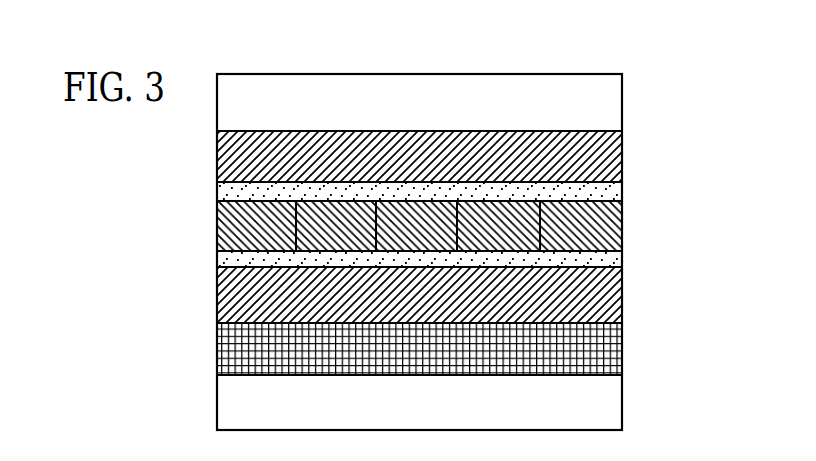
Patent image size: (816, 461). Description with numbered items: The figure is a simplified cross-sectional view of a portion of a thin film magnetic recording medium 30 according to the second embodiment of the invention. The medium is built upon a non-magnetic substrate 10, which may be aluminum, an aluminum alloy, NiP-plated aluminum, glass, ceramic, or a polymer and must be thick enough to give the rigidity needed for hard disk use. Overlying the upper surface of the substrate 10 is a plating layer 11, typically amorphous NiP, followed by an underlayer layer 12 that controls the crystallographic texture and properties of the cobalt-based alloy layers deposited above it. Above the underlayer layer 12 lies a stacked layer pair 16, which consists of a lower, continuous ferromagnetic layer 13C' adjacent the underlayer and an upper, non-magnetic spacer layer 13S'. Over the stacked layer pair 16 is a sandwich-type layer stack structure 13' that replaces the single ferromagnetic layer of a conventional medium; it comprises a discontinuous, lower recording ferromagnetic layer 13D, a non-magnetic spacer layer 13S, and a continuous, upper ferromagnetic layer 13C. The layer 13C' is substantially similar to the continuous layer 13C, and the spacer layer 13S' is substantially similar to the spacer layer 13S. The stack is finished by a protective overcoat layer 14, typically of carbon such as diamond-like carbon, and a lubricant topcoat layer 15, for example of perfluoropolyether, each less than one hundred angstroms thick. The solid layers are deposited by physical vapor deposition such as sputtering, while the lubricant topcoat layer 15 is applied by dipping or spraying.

The second embodiment of magnetic recording medium 30 is at (548, 58).
The protective overcoat layer 14 is at (468, 102).
The lubricant topcoat layer 15 is at (626, 99).
The continuous upper ferromagnetic layer 13C is at (457, 156).
The non-magnetic spacer layer 13S is at (456, 192).
The discontinuous lower ferromagnetic layer 13D is at (626, 225).
The sandwich-type layer stack structure 13' is at (491, 191).
The upper non-magnetic spacer layer 13S' is at (458, 261).
The lower continuous ferromagnetic layer 13C' is at (459, 295).
The stacked layer pair 16 is at (714, 248).
The underlayer layer 12 is at (626, 348).
The non-magnetic substrate 10 is at (468, 402).
The plating layer 11 is at (626, 400).